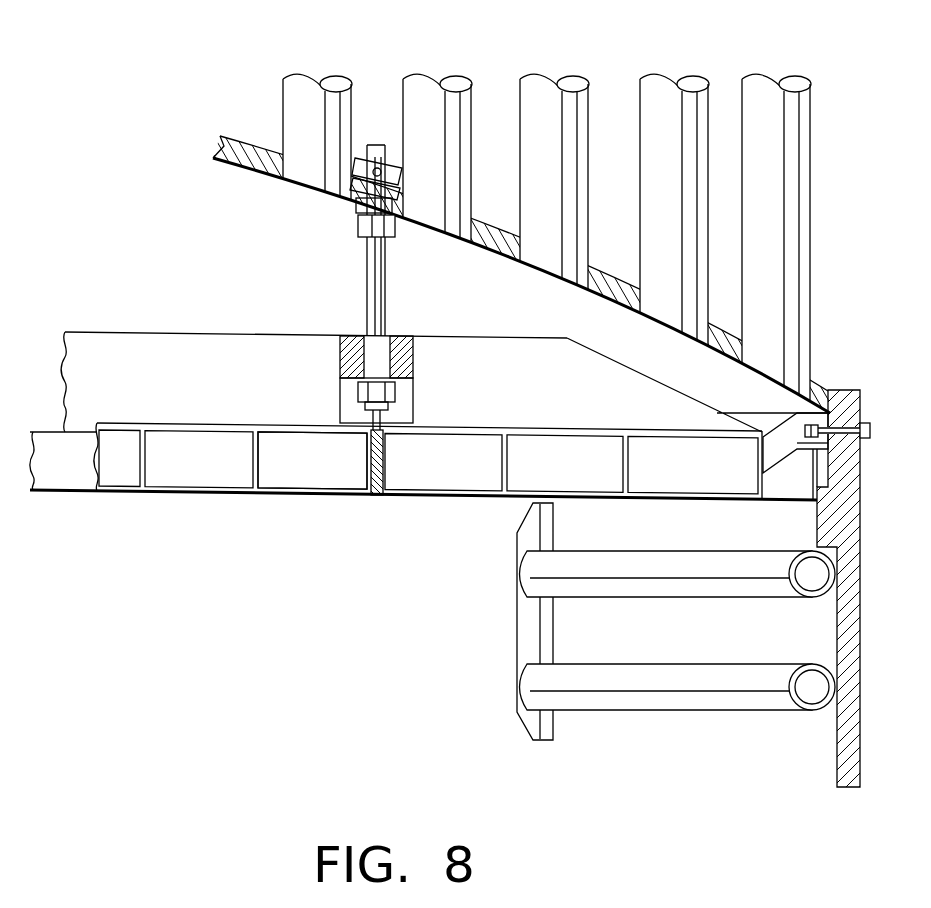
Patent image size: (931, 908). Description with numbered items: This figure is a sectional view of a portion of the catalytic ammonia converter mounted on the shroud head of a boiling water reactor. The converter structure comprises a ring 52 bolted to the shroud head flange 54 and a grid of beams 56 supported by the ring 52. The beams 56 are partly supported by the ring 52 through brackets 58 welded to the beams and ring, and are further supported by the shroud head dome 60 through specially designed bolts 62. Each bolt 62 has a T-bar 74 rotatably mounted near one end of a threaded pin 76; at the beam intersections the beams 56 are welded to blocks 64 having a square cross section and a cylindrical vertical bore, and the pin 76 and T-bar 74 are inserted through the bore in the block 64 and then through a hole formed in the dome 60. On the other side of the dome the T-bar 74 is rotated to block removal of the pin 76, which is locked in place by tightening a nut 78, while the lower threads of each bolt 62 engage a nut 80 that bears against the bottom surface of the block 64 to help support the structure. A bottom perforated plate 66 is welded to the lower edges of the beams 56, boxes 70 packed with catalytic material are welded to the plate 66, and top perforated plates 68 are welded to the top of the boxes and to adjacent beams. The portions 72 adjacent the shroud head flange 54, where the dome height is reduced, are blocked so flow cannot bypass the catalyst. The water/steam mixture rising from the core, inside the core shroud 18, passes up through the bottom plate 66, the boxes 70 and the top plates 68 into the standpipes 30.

The core shroud 18 is at (842, 640).
The vertical standpipes 30 is at (757, 92).
The ring 52 is at (757, 418).
The shroud head flange 54 is at (842, 390).
The beams 56 is at (122, 343).
The brackets 58 is at (773, 447).
The shroud head dome 60 is at (237, 138).
The bolts 62 is at (342, 283).
The blocks 64 is at (403, 336).
The bottom perforated plate 66 is at (183, 493).
The top perforated plates 68 is at (213, 425).
The boxes 70 is at (300, 473).
The portions of the shroud head cross-sectional area 72 is at (790, 487).
The T-bar 74 is at (363, 147).
The threaded pin 76 is at (387, 278).
The nut 78 is at (357, 227).
The nut 80 is at (378, 392).